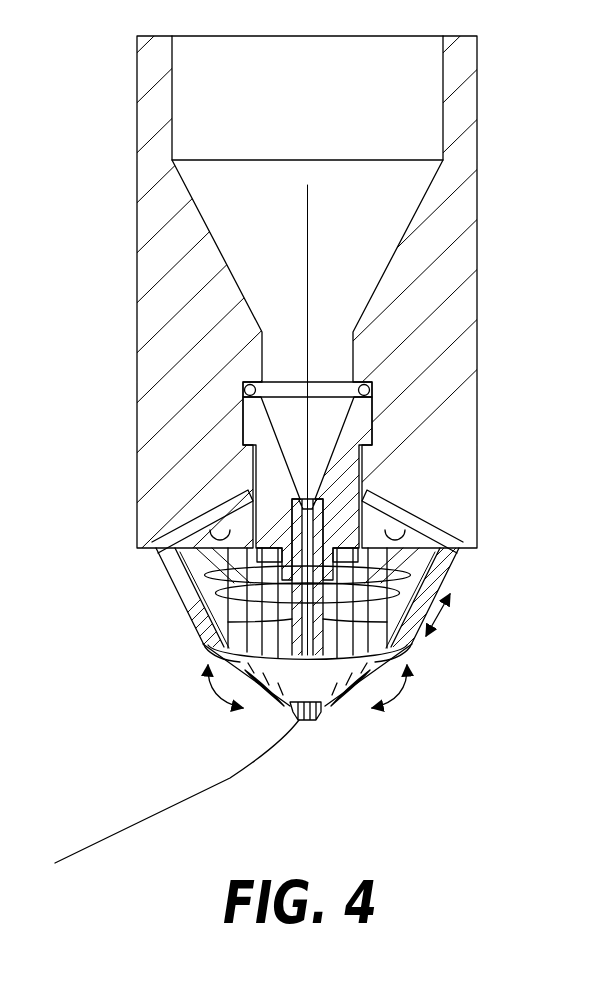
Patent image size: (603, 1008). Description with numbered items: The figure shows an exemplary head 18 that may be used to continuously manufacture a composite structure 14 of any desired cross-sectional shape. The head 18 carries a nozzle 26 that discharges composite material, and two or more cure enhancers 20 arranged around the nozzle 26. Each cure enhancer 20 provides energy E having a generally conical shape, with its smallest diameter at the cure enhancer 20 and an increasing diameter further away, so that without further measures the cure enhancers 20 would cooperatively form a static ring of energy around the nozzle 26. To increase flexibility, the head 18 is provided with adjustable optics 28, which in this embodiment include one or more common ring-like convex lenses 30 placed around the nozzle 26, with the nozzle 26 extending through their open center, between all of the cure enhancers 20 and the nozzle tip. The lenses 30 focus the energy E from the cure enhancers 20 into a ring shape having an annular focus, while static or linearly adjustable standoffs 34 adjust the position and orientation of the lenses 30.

The head 18 is at (76, 57).
The cure enhancer 20 is at (218, 537).
The standoffs 34 is at (178, 581).
The energy E is at (160, 560).
The adjustable optics 28 is at (396, 628).
The lens 30 is at (515, 700).
The nozzle 26 is at (313, 722).
The composite structure 14 is at (163, 810).